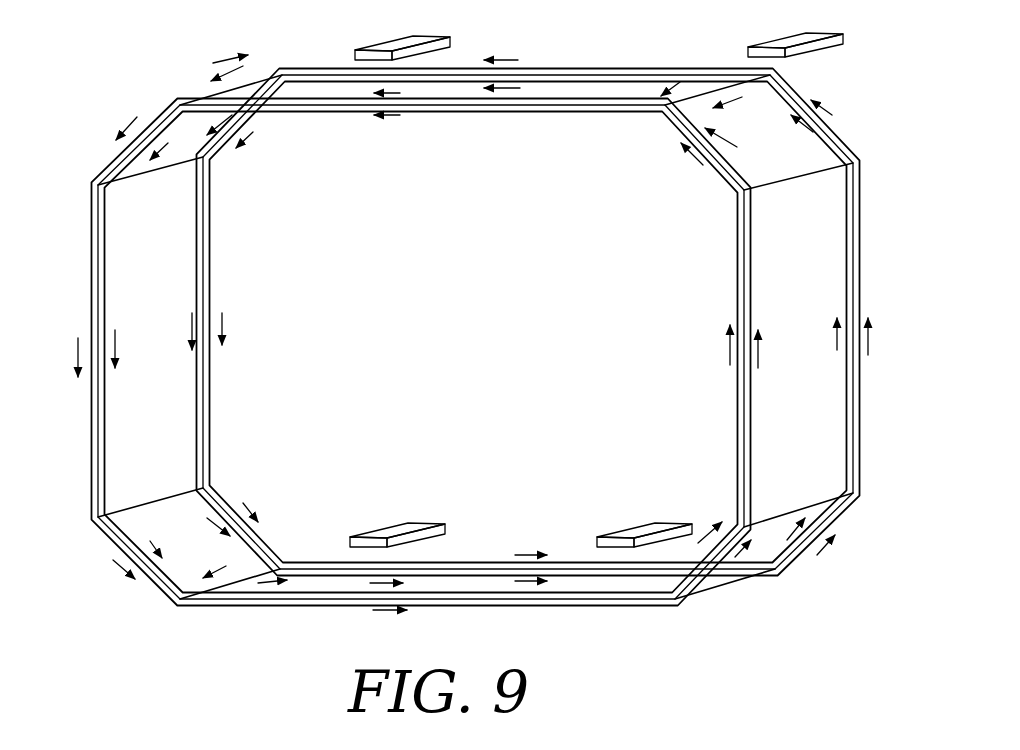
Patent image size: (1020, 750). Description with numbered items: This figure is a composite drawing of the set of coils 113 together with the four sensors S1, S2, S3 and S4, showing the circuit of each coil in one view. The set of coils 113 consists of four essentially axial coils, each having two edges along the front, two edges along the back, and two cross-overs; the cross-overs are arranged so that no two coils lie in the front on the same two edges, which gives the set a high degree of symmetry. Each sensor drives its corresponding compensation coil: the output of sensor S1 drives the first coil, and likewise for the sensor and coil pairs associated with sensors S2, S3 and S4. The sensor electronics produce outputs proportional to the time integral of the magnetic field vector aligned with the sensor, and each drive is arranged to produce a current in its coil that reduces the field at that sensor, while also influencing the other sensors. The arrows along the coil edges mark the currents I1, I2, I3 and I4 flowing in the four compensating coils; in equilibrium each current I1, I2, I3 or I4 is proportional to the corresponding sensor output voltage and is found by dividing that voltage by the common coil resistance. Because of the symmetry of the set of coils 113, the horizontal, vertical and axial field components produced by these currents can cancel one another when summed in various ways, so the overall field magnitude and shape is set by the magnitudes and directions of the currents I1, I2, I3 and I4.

The set of coils 113 is at (322, 54).
The sensor 1 S1 is at (400, 42).
The sensor 2 S2 is at (778, 40).
The sensor 3 S3 is at (637, 528).
The sensor 4 S4 is at (392, 530).
The current through first compensating coil I1 is at (240, 128).
The current through second compensating coil I2 is at (243, 66).
The current through third compensating coil I3 is at (137, 117).
The current through fourth compensating coil I4 is at (700, 523).